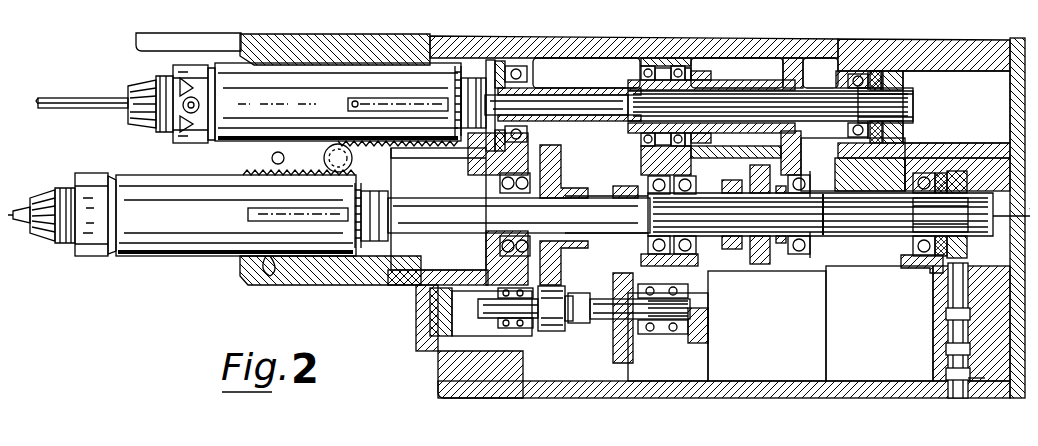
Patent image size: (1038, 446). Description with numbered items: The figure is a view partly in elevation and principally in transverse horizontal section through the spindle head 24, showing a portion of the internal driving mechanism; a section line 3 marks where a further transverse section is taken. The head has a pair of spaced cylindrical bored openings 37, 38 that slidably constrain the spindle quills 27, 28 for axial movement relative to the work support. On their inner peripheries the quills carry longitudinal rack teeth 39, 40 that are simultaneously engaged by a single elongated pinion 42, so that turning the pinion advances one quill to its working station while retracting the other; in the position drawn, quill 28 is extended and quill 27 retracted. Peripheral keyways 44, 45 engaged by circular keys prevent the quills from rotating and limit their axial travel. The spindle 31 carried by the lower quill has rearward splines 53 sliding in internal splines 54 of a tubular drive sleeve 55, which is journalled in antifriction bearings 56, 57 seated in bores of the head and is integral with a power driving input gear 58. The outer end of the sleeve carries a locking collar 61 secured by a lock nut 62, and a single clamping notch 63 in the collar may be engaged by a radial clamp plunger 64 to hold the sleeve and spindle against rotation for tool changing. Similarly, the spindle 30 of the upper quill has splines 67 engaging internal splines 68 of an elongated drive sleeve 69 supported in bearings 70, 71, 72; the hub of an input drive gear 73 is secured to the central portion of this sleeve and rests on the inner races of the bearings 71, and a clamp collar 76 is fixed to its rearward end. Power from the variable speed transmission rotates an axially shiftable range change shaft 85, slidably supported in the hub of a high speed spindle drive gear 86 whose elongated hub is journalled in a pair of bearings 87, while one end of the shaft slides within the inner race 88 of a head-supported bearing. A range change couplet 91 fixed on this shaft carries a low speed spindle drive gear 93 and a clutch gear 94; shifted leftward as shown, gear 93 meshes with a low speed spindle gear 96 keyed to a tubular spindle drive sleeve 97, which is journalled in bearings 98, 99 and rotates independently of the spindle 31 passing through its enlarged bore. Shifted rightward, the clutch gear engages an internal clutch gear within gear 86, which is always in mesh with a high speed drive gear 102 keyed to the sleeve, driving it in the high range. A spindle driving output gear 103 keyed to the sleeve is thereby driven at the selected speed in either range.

The section line 3 is at (1011, 195).
The spindle head 24 is at (435, 366).
The spindle quill 27 is at (222, 130).
The spindle quill 28 is at (157, 248).
The spindle 30 is at (590, 96).
The spindle 31 is at (397, 226).
The cylindrical bored opening 37 is at (243, 60).
The cylindrical bored opening 38 is at (265, 262).
The rack teeth 39 is at (413, 141).
The rack teeth 40 is at (314, 163).
The elongated pinion 42 is at (345, 155).
The keyway 44 is at (414, 90).
The keyway 45 is at (242, 207).
The longitudinal splines 53 is at (815, 220).
The internal splines 54 is at (868, 222).
The drive sleeve 55 is at (830, 186).
The antifriction bearing 56 is at (776, 245).
The antifriction bearing 57 is at (900, 252).
The power driving input gear 58 is at (756, 158).
The locking collar 61 is at (960, 182).
The lock nut 62 is at (960, 207).
The clamping notch 63 is at (958, 236).
The clamp plunger 64 is at (940, 290).
The longitudinal splines 67 is at (752, 112).
The internal splines 68 is at (896, 97).
The elongated drive sleeve 69 is at (744, 86).
The antifriction bearing 70 is at (519, 68).
The antifriction bearings 71 is at (670, 58).
The antifriction bearing 72 is at (840, 72).
The input drive gear 73 is at (700, 70).
The clamp collar 76 is at (895, 75).
The range change shaft 85 is at (632, 321).
The high speed spindle drive gear 86 is at (606, 352).
The antifriction bearings 87 is at (652, 331).
The inner race 88 is at (472, 302).
The range change couplet 91 is at (570, 272).
The low speed spindle drive gear 93 is at (538, 320).
The clutch gear 94 is at (568, 280).
The low speed spindle gear 96 is at (554, 150).
The tubular spindle drive sleeve 97 is at (490, 232).
The bearing 98 is at (490, 178).
The bearing 99 is at (668, 172).
The high speed drive gear 102 is at (618, 178).
The spindle driving output gear 103 is at (720, 246).